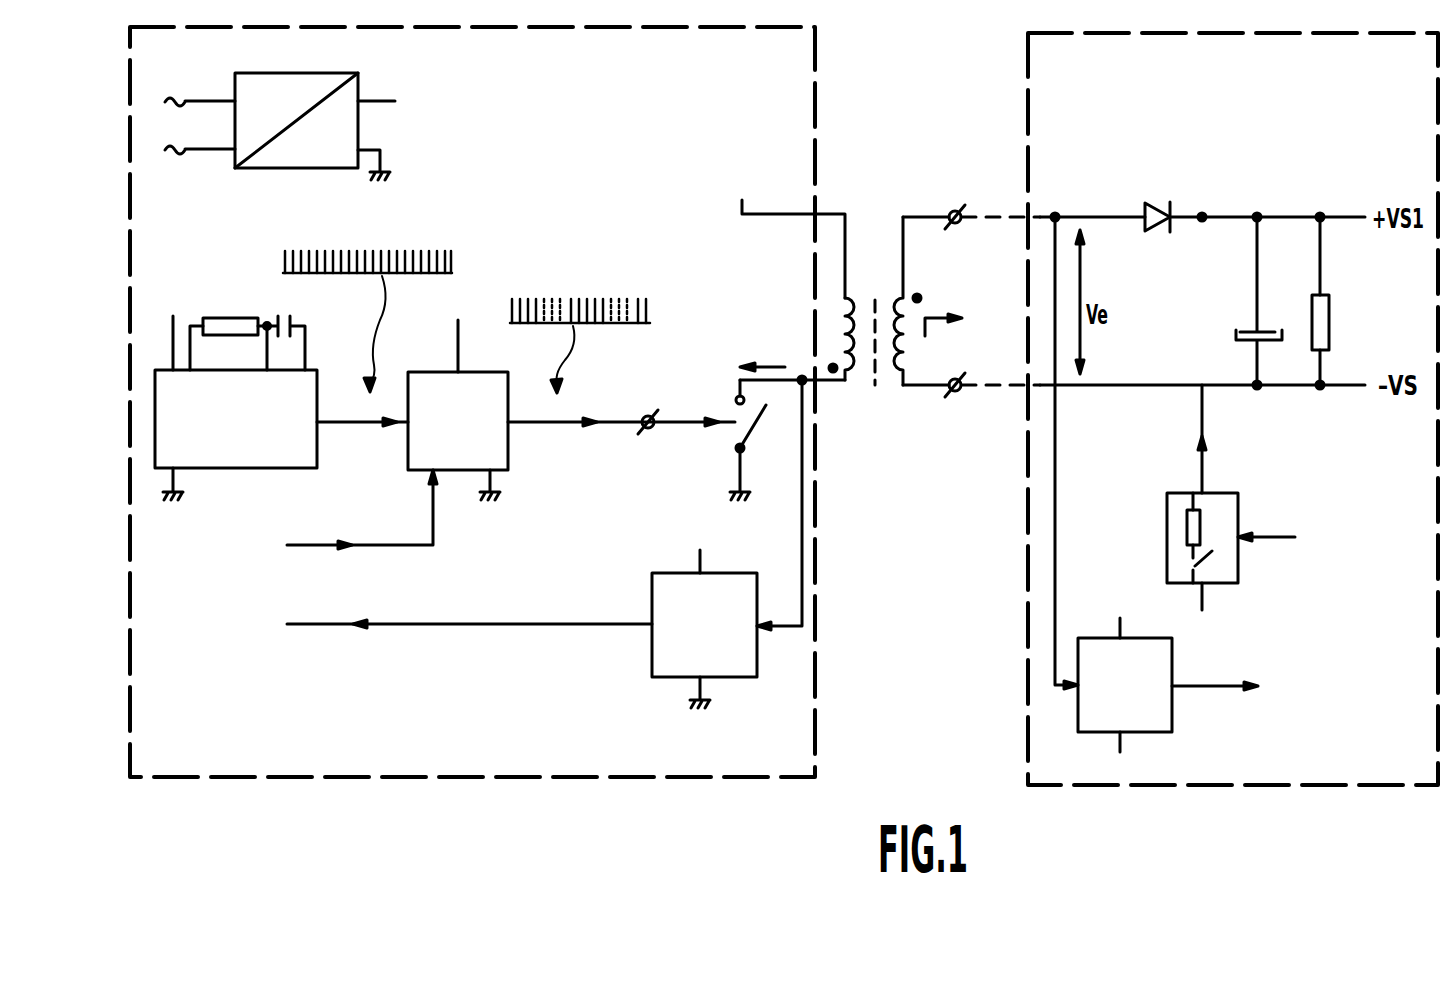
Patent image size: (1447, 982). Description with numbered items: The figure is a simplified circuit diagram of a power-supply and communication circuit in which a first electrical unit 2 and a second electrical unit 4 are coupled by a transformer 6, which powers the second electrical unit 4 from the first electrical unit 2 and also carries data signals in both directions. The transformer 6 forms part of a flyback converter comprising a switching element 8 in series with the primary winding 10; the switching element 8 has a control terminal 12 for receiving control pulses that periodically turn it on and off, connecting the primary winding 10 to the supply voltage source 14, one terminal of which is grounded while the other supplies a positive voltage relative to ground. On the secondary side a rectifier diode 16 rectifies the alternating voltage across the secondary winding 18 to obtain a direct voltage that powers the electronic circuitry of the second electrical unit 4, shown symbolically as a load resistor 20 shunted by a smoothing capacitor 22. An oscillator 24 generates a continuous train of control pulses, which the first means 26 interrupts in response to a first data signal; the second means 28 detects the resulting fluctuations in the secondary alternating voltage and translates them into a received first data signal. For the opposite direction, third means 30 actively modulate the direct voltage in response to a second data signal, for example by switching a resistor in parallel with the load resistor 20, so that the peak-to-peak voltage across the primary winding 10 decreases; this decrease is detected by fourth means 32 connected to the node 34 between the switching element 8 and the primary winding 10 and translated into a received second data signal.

The first electrical unit 2 is at (585, 779).
The second electrical unit 4 is at (1320, 787).
The transformer 6 is at (889, 305).
The switching element 8 is at (755, 425).
The primary winding 10 is at (848, 348).
The control terminal 12 is at (652, 428).
The supply voltage source 14 is at (349, 73).
The rectifier diode 16 is at (1150, 213).
The secondary winding 18 is at (903, 387).
The load resistor 20 is at (1329, 320).
The smoothing capacitor 22 is at (1262, 328).
The oscillator 24 is at (270, 468).
The first means 26 is at (482, 378).
The second means 28 is at (1157, 667).
The third means 30 is at (1218, 505).
The fourth means 32 is at (735, 661).
The node 34 is at (815, 393).